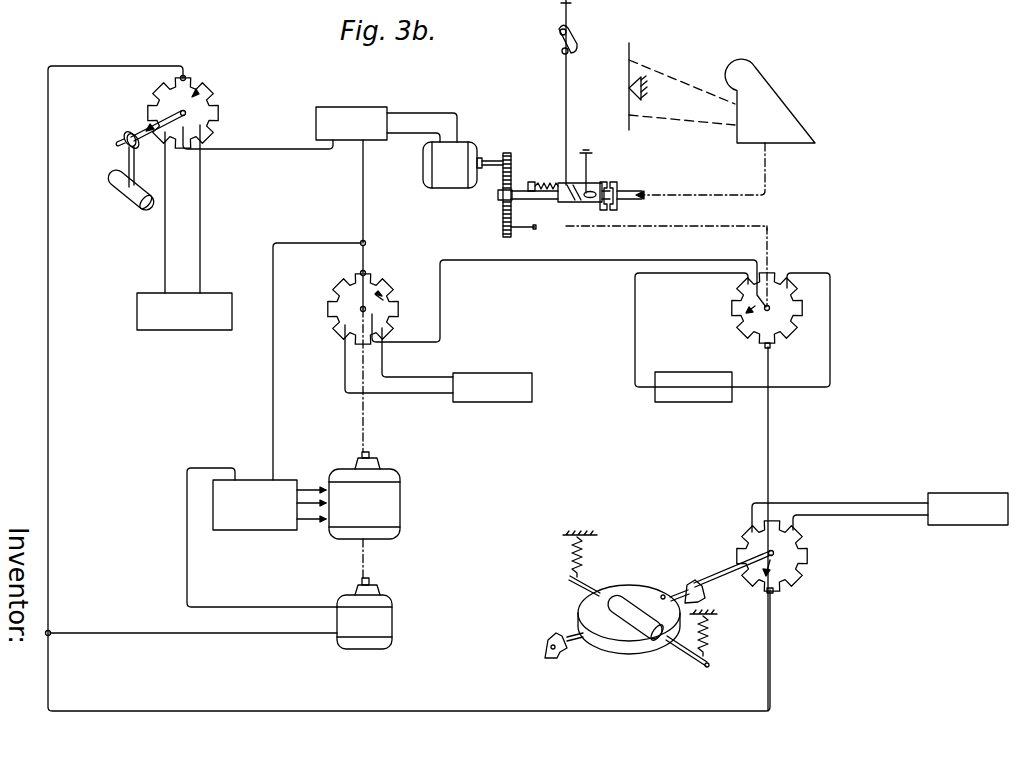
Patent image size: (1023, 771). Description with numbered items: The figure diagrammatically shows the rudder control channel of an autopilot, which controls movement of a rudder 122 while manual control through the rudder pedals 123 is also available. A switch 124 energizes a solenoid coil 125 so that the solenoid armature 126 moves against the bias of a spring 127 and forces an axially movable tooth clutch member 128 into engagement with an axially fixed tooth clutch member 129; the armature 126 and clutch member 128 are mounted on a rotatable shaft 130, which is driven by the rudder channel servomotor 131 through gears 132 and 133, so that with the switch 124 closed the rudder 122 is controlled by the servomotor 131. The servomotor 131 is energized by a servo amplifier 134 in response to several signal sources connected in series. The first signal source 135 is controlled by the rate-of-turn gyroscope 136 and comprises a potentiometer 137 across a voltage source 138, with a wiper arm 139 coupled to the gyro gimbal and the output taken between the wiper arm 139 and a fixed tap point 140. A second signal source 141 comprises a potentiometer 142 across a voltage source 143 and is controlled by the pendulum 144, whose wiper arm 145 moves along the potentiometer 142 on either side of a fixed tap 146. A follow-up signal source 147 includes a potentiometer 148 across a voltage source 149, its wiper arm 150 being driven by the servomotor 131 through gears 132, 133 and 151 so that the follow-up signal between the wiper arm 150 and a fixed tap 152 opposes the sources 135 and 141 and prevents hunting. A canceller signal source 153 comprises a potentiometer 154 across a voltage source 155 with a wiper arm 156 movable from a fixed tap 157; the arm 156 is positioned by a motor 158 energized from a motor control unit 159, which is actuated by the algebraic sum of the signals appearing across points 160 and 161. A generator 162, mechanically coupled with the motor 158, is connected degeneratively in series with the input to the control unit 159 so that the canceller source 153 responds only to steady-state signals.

The rudder 122 is at (784, 107).
The rudder pedals 123 is at (628, 47).
The switch 124 is at (558, 40).
The solenoid coil 125 is at (585, 201).
The solenoid armature 126 is at (590, 183).
The spring 127 is at (543, 181).
The axially movable tooth clutch member 128 is at (616, 182).
The axially fixed tooth clutch member 129 is at (620, 207).
The rotatable shaft 130 is at (523, 200).
The rudder channel servomotor 131 is at (463, 165).
The gear 132 is at (506, 152).
The gear 133 is at (502, 189).
The servo amplifier 134 is at (347, 106).
The first signal source 135 is at (855, 547).
The rate-of-turn gyroscope 136 is at (628, 600).
The potentiometer 137 is at (738, 541).
The voltage source 138 is at (973, 527).
The potentiometer wiper arm 139 is at (806, 568).
The fixed tap point 140 is at (776, 591).
The second signal source 141 is at (250, 140).
The potentiometer 142 is at (214, 96).
The voltage source 143 is at (189, 332).
The pendulum 144 is at (134, 194).
The potentiometer wiper arm 145 is at (159, 115).
The fixed tap 146 is at (186, 76).
The follow-up signal source 147 is at (710, 315).
The potentiometer 148 is at (796, 323).
The voltage source 149 is at (703, 404).
The potentiometer wiper arm 150 is at (765, 319).
The gear 151 is at (503, 228).
The fixed tap 152 is at (764, 346).
The rate and follow-up canceller signal source 153 is at (341, 273).
The potentiometer 154 is at (383, 300).
The voltage source 155 is at (486, 372).
The wiper arm 156 is at (372, 303).
The fixed tap 157 is at (367, 272).
The motor 158 is at (364, 495).
The motor control unit 159 is at (262, 531).
The point 160 is at (51, 630).
The point 161 is at (360, 241).
The generator 162 is at (364, 613).